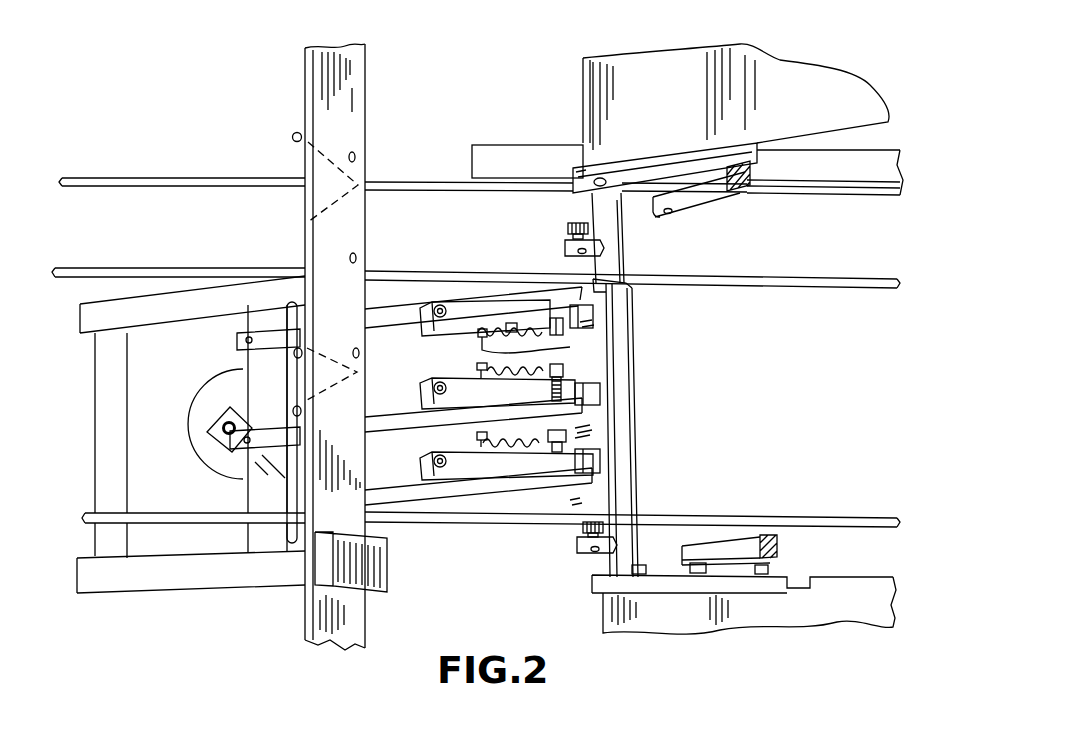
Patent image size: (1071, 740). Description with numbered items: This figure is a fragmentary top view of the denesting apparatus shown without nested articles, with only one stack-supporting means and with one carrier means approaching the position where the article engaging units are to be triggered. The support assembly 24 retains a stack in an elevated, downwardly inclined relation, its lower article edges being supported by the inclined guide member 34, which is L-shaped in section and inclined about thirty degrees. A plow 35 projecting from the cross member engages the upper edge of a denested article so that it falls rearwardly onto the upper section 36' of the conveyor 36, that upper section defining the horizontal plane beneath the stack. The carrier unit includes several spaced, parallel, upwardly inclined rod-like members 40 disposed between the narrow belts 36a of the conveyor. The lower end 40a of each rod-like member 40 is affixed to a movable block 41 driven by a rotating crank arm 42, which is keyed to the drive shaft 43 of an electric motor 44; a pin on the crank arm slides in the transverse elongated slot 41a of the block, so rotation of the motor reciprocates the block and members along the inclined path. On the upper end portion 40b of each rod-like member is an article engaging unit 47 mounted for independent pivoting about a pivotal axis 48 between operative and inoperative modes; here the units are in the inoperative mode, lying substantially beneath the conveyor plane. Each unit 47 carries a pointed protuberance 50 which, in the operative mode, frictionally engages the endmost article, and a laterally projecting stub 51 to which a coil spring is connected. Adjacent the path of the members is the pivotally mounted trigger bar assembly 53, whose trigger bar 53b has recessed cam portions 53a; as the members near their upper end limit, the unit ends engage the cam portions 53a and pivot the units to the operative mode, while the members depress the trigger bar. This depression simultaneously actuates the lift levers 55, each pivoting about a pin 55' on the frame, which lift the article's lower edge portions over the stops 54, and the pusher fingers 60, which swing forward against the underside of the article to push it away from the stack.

The support assembly 24 is at (352, 62).
The inclined guide member 34 is at (773, 87).
The plow 35 is at (293, 137).
The conveyor 36 is at (113, 17).
The narrow belt 36a is at (55, 6).
The conveyor upper section 36' is at (476, 243).
The rod-like member 40 is at (387, 482).
The lower end of rod-like member 40a is at (247, 328).
The upper end portion of rod-like member 40b is at (533, 480).
The movable block 41 is at (245, 536).
The elongated slot 41a is at (292, 305).
The crank arm 42 is at (240, 462).
The drive shaft 43 is at (222, 425).
The electric motor 44 is at (205, 390).
The article engaging unit 47 is at (466, 320).
The pivotal axis 48 is at (512, 323).
The pointed protuberance 50 is at (435, 303).
The stub 51 is at (605, 352).
The trigger bar assembly 53 is at (634, 329).
The recessed cam portion 53a is at (585, 392).
The trigger bar 53b is at (603, 372).
The stop 54 is at (572, 236).
The lift lever 55 is at (743, 302).
The pin 55' is at (557, 126).
The pusher finger 60 is at (702, 210).